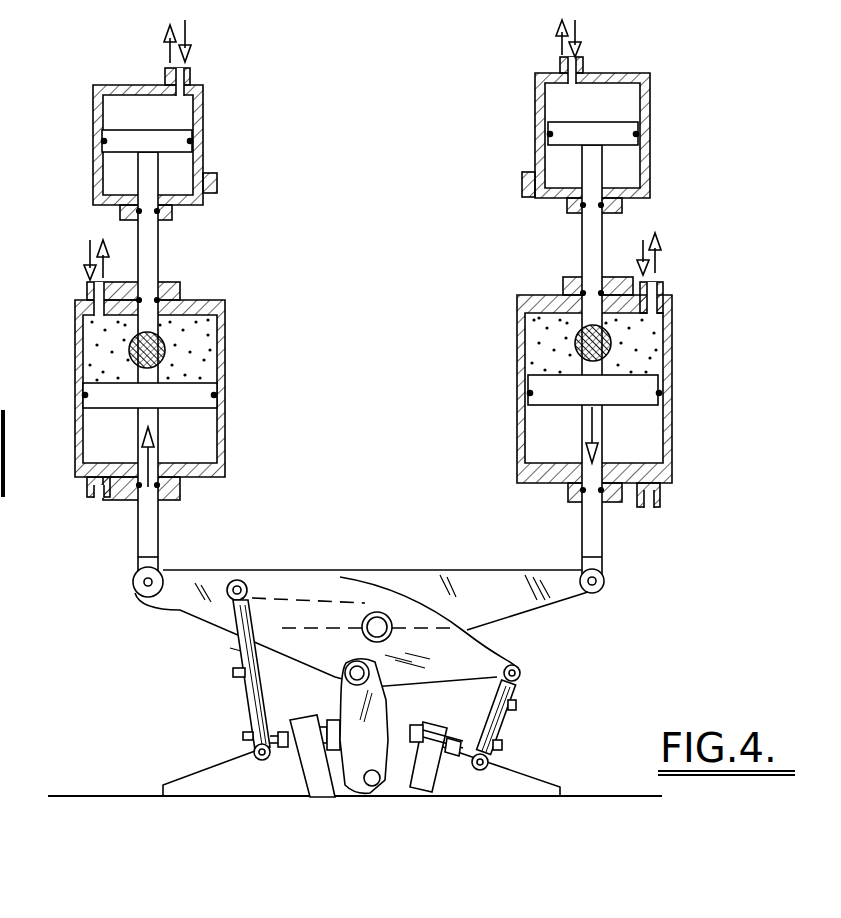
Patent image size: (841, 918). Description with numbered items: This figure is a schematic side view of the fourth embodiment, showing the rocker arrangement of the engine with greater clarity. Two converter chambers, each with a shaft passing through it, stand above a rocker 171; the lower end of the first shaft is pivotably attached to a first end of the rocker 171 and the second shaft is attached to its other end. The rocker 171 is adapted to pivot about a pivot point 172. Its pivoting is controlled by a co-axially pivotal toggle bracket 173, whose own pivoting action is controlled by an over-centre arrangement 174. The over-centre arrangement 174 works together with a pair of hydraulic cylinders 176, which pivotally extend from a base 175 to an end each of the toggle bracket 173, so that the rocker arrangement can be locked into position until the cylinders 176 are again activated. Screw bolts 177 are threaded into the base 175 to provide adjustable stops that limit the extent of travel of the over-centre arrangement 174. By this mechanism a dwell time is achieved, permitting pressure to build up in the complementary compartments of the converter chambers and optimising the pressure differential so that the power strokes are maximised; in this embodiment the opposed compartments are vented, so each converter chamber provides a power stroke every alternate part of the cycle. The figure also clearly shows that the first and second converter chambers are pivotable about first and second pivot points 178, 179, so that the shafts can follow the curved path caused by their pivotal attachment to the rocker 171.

The rocker 171 is at (493, 583).
The pivot point 172 is at (367, 597).
The toggle bracket 173 is at (477, 648).
The over-centre arrangement 174 is at (317, 773).
The base 175 is at (513, 777).
The hydraulic cylinders 176 is at (508, 727).
The screw bolts 177 is at (418, 722).
The first pivot point 178 is at (147, 350).
The second pivot point 179 is at (593, 343).